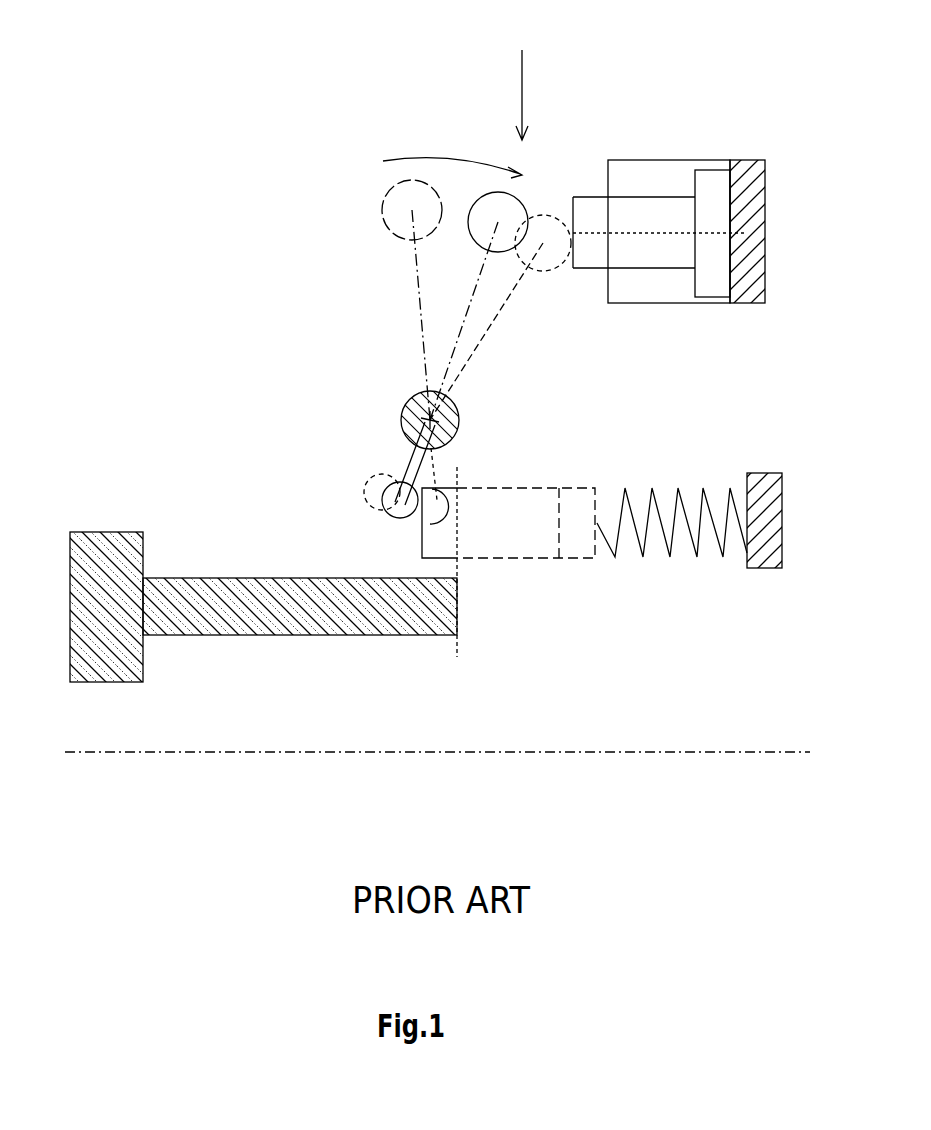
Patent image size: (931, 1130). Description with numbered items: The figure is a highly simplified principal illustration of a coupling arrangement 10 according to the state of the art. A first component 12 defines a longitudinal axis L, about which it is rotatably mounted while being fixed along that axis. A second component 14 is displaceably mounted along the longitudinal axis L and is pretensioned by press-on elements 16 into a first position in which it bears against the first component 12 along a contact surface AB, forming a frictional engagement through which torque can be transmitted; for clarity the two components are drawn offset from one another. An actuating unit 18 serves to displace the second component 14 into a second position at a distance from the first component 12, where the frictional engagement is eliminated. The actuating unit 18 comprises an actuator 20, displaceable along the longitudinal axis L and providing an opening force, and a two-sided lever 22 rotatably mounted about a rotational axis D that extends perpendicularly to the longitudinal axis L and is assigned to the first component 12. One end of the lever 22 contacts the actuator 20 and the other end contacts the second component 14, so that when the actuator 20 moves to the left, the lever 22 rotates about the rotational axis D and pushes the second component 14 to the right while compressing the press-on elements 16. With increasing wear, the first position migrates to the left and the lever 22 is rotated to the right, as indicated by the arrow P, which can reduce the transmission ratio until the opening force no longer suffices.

The coupling arrangement 10 is at (181, 127).
The first component 12 is at (270, 594).
The second component 14 is at (520, 549).
The press-on elements 16 is at (680, 490).
The actuating unit 18 is at (517, 76).
The actuator 20 is at (657, 165).
The two-sided lever 22 is at (417, 300).
The rotational axis D is at (432, 422).
The arrow P is at (455, 157).
The contact surface AB is at (458, 648).
The longitudinal axis L is at (632, 750).